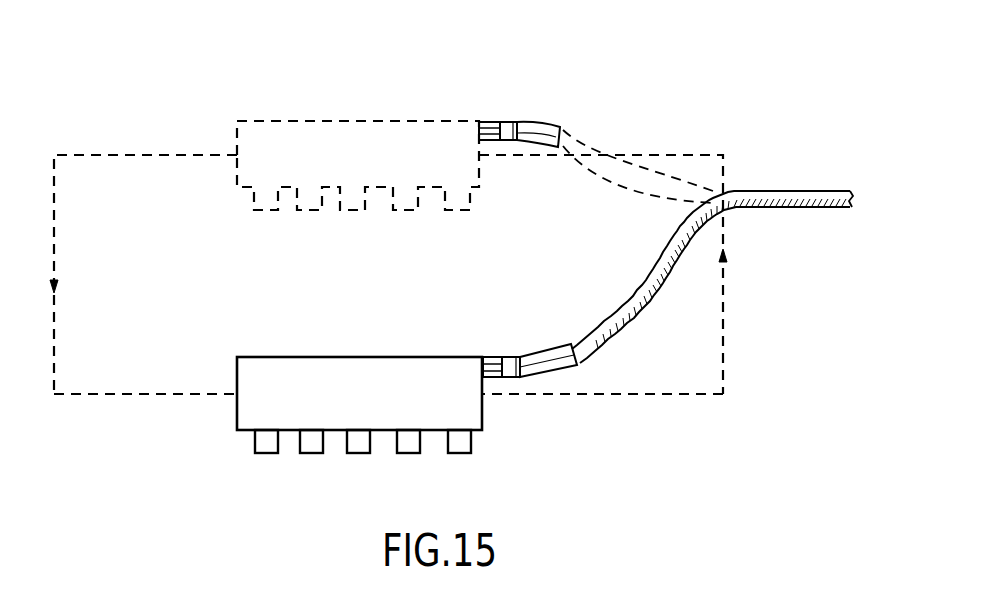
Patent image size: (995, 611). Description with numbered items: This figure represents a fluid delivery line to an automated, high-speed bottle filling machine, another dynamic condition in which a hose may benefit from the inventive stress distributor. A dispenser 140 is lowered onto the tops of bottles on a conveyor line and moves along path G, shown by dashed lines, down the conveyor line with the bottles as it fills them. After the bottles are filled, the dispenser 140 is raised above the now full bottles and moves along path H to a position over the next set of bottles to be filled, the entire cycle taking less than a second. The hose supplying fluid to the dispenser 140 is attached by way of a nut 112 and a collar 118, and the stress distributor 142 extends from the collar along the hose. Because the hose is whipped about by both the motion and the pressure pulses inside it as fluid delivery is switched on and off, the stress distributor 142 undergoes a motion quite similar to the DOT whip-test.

The dispenser 140 is at (317, 121).
The nut 112 is at (493, 118).
The collar 118 is at (512, 118).
The stress distributor 142 is at (540, 354).
The path H is at (145, 155).
The path G is at (150, 394).